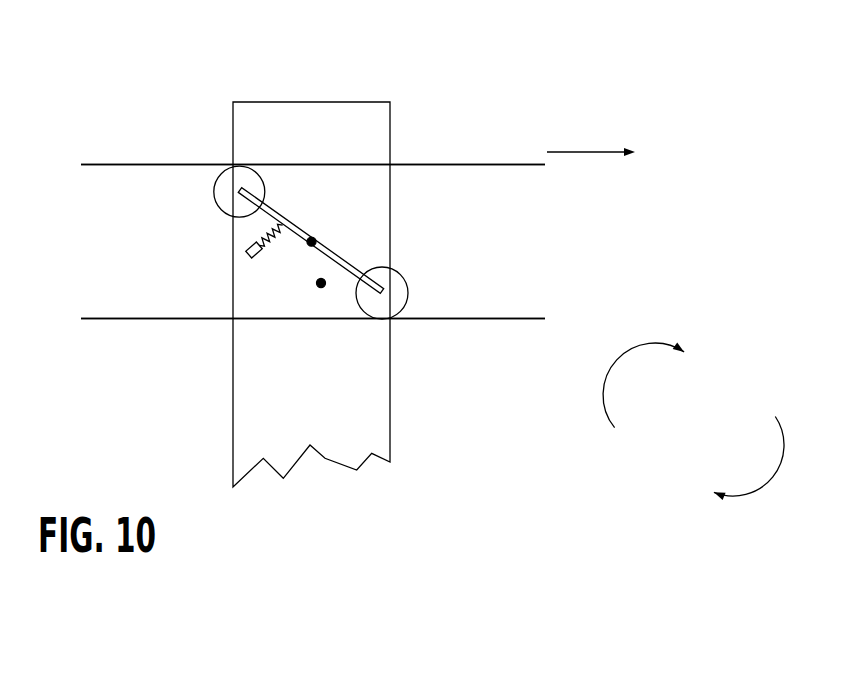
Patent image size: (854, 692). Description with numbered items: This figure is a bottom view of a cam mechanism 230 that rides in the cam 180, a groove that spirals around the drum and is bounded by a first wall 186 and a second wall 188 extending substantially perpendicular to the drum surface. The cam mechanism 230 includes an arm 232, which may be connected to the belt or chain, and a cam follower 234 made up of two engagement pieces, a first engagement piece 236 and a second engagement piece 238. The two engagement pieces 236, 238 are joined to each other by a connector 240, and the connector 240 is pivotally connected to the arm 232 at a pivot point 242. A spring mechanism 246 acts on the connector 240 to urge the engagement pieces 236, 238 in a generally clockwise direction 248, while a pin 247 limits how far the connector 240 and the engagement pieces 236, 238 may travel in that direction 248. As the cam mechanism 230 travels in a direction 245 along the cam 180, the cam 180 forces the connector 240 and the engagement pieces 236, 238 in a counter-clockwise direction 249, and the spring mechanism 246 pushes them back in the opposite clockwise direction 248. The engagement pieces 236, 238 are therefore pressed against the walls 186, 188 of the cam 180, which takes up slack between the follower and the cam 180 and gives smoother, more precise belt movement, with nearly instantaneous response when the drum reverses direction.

The cam 180 is at (137, 164).
The first wall 186 is at (123, 164).
The second wall 188 is at (313, 346).
The cam mechanism 230 is at (466, 114).
The arm 232 is at (389, 437).
The cam follower 234 is at (378, 240).
The first engagement piece 236 is at (217, 205).
The second engagement piece 238 is at (408, 292).
The connector 240 is at (260, 219).
The pivot point 242 is at (315, 239).
The direction 245 is at (570, 150).
The spring mechanism 246 is at (265, 247).
The pin 247 is at (324, 286).
The clockwise direction 248 is at (611, 372).
The counter-clockwise direction 249 is at (782, 472).